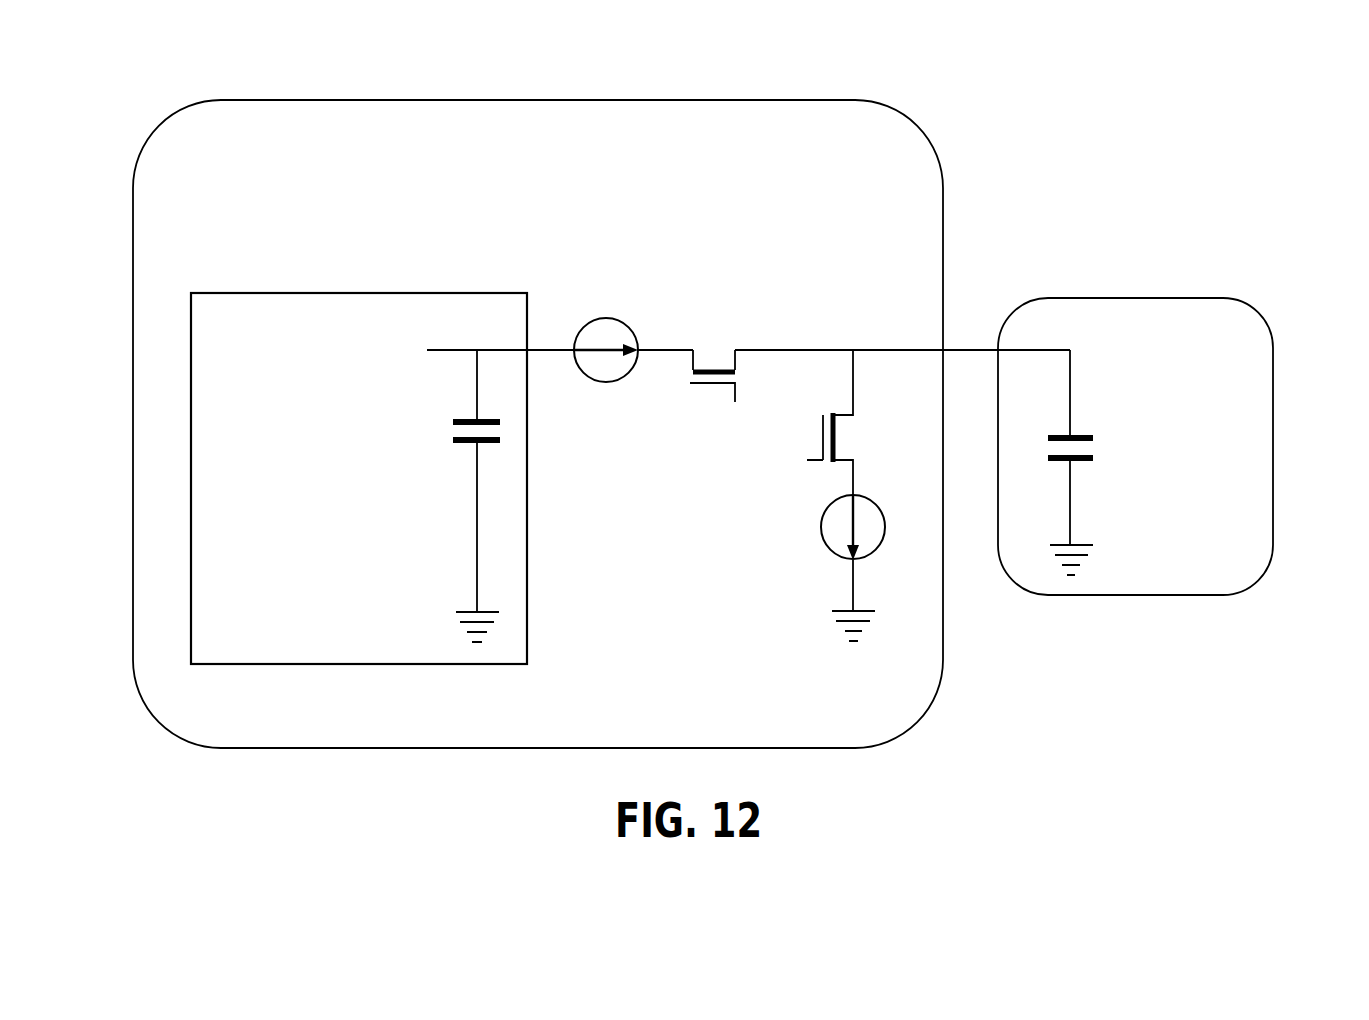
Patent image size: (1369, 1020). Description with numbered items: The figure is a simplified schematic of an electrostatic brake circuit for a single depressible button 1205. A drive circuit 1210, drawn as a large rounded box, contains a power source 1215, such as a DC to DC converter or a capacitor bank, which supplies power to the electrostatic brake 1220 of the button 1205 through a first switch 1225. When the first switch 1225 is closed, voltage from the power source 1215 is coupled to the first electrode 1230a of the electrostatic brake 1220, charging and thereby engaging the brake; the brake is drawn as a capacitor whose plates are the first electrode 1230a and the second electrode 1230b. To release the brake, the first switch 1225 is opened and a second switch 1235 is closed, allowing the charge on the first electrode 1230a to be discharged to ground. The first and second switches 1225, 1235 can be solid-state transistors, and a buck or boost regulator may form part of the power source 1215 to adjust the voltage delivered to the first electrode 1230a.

The depressible button 1205 is at (1177, 298).
The drive circuit 1210 is at (832, 100).
The power source 1215 is at (443, 293).
The electrostatic brake 1220 is at (1094, 462).
The first switch 1225 is at (706, 370).
The first electrode 1230a is at (1058, 435).
The second electrode 1230b is at (1060, 462).
The second switch 1235 is at (838, 430).